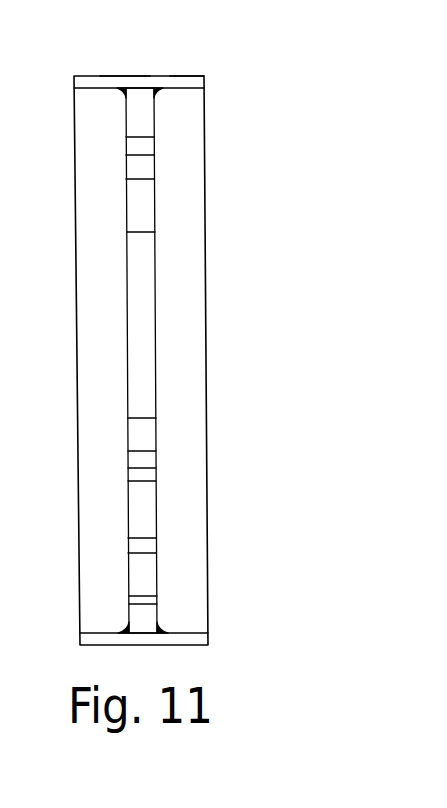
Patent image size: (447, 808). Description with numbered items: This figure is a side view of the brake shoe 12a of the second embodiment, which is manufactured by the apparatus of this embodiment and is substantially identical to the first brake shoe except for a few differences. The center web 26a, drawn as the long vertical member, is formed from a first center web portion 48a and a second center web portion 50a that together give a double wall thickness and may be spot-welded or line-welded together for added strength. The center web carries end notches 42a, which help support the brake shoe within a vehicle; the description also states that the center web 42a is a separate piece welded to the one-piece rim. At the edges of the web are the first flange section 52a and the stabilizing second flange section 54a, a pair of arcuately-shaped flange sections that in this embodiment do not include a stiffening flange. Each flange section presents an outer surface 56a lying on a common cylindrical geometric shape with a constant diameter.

The brake shoe 12a is at (228, 167).
The center web 26a is at (155, 214).
The end notches 42a is at (131, 146).
The first center web portion 48a is at (130, 124).
The second center web portion 50a is at (149, 111).
The first flange section 52a is at (93, 637).
The second flange section 54a is at (192, 638).
The outer surface 56a is at (106, 73).